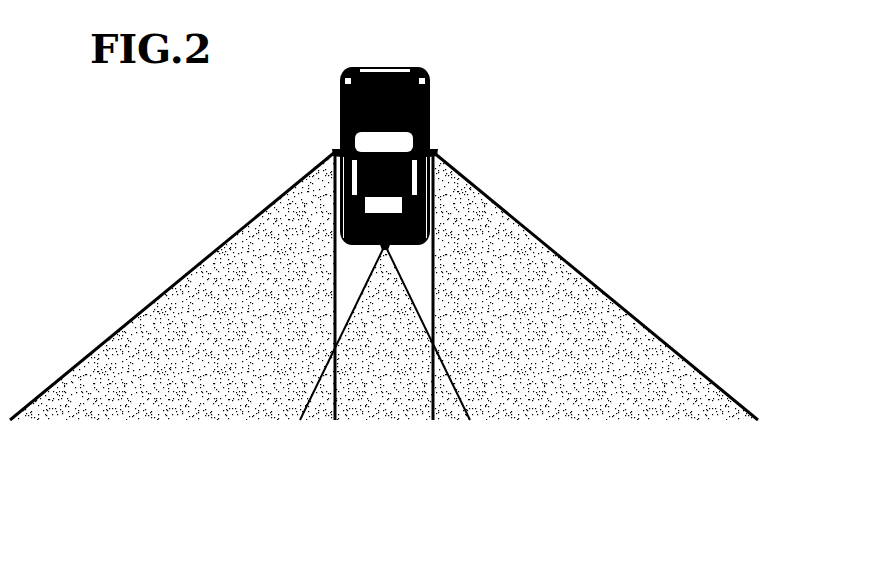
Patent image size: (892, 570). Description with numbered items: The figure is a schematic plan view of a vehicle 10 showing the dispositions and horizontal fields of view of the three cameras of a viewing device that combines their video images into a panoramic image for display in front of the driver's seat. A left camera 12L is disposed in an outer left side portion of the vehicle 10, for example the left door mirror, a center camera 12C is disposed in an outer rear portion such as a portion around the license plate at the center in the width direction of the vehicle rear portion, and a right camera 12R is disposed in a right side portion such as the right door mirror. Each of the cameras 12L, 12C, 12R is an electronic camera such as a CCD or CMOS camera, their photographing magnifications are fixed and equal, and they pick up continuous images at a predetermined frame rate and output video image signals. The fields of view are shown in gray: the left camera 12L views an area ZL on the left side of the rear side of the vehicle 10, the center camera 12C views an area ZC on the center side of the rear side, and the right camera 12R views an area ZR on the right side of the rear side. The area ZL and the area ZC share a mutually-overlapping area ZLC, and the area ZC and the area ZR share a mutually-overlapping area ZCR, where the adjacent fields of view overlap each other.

The vehicle 10 is at (431, 103).
The left camera 12L is at (334, 152).
The right camera 12R is at (436, 152).
The center camera 12C is at (385, 246).
The area on the left side of the rear side of the vehicle ZL is at (178, 378).
The area on the right side of the rear side of the vehicle ZR is at (560, 373).
The area on the center side of the rear side of the vehicle ZC is at (385, 393).
The mutually-overlapping area ZLC is at (323, 403).
The mutually-overlapping area ZCR is at (447, 403).